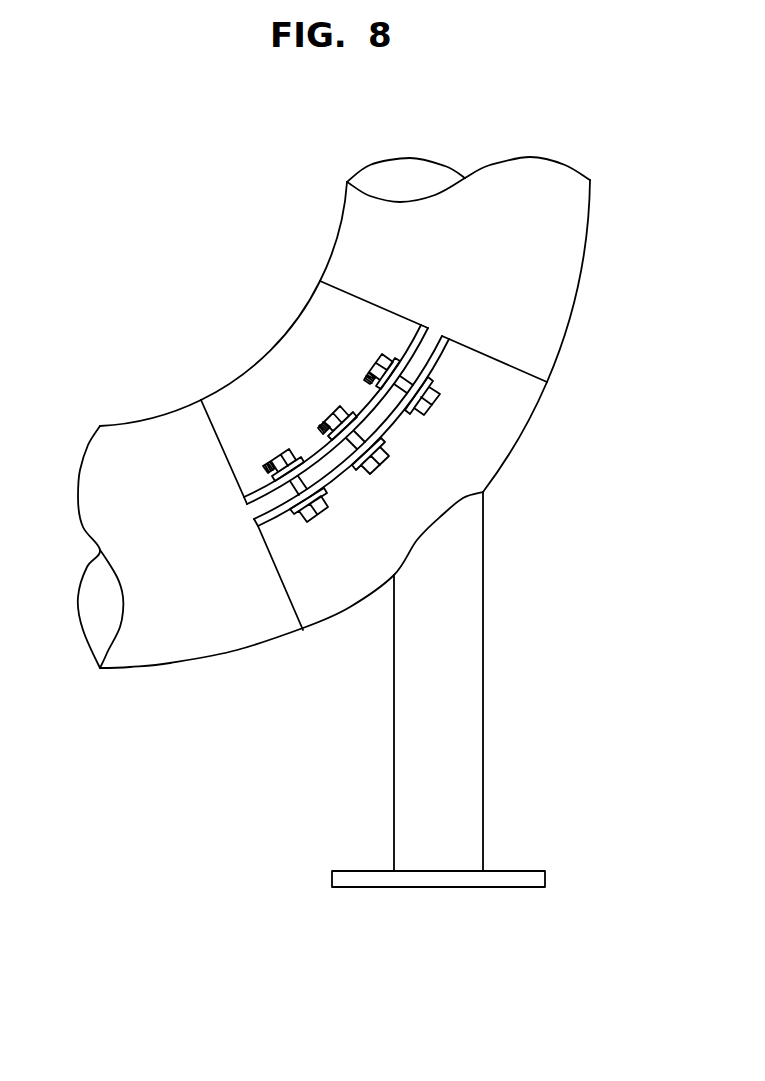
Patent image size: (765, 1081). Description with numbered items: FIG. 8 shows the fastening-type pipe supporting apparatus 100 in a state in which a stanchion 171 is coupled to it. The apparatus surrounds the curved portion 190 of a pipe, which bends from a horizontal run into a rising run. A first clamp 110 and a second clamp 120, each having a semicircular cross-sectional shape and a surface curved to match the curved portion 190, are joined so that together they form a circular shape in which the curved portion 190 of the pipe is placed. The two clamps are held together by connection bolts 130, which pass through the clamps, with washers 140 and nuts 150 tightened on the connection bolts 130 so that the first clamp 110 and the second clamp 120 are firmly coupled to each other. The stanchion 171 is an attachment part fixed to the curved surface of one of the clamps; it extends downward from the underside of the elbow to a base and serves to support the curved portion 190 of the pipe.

The fastening-type pipe supporting apparatus 100 is at (165, 262).
The first clamp 110 is at (455, 455).
The second clamp 120 is at (282, 358).
The connection bolts 130 is at (445, 390).
The washers 140 is at (437, 372).
The nuts 150 is at (378, 350).
The stanchion 171 is at (472, 708).
The curved portion 190 is at (556, 315).